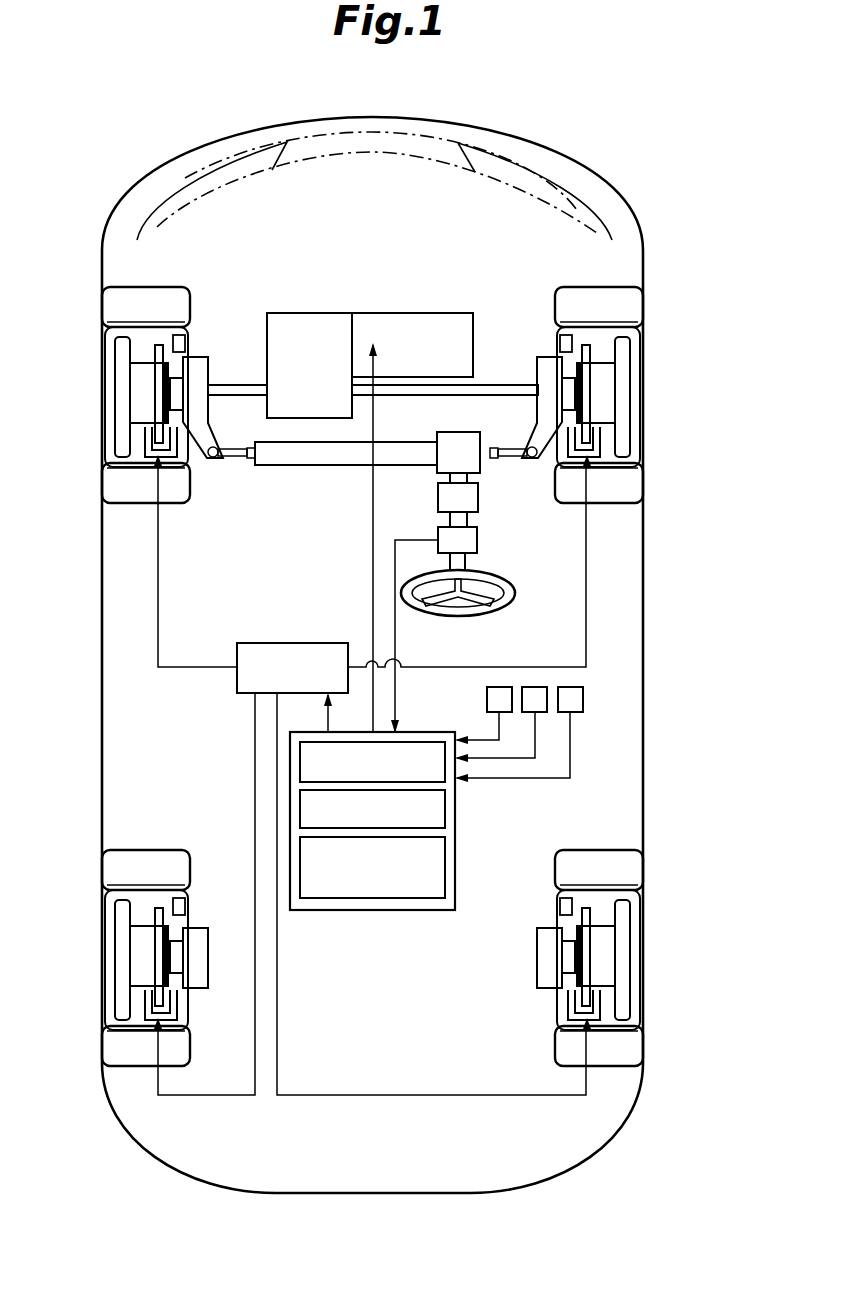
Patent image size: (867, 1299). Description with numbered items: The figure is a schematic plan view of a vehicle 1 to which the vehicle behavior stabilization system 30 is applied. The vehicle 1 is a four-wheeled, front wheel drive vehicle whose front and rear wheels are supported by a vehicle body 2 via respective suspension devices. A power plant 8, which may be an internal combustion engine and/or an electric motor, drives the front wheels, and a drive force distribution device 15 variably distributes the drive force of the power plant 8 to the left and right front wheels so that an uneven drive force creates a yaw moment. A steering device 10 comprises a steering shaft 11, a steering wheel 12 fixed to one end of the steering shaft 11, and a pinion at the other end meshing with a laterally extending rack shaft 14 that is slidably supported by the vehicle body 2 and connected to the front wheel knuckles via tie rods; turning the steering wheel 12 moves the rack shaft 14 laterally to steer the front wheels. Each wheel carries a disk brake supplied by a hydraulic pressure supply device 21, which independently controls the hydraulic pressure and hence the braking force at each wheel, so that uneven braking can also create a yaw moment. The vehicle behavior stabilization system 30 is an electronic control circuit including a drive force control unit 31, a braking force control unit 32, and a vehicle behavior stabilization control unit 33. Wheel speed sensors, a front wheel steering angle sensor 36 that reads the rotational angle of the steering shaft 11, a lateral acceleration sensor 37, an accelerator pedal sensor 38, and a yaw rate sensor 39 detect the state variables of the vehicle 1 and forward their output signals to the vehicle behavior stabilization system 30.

The vehicle 1 is at (150, 118).
The vehicle body 2 is at (562, 156).
The power plant 8 is at (400, 312).
The steering device 10 is at (292, 482).
The steering shaft 11 is at (466, 517).
The steering wheel 12 is at (515, 590).
The rack shaft 14 is at (330, 466).
The drive force distribution device 15 is at (303, 312).
The hydraulic pressure supply device 21 is at (300, 643).
The vehicle behavior stabilization system 30 is at (348, 911).
The drive force control unit 31 is at (418, 740).
The braking force control unit 32 is at (447, 812).
The vehicle behavior stabilization control unit 33 is at (447, 872).
The front wheel steering angle sensor 36 is at (478, 538).
The lateral acceleration sensor 37 is at (583, 697).
The accelerator pedal sensor 38 is at (537, 687).
The yaw rate sensor 39 is at (487, 697).